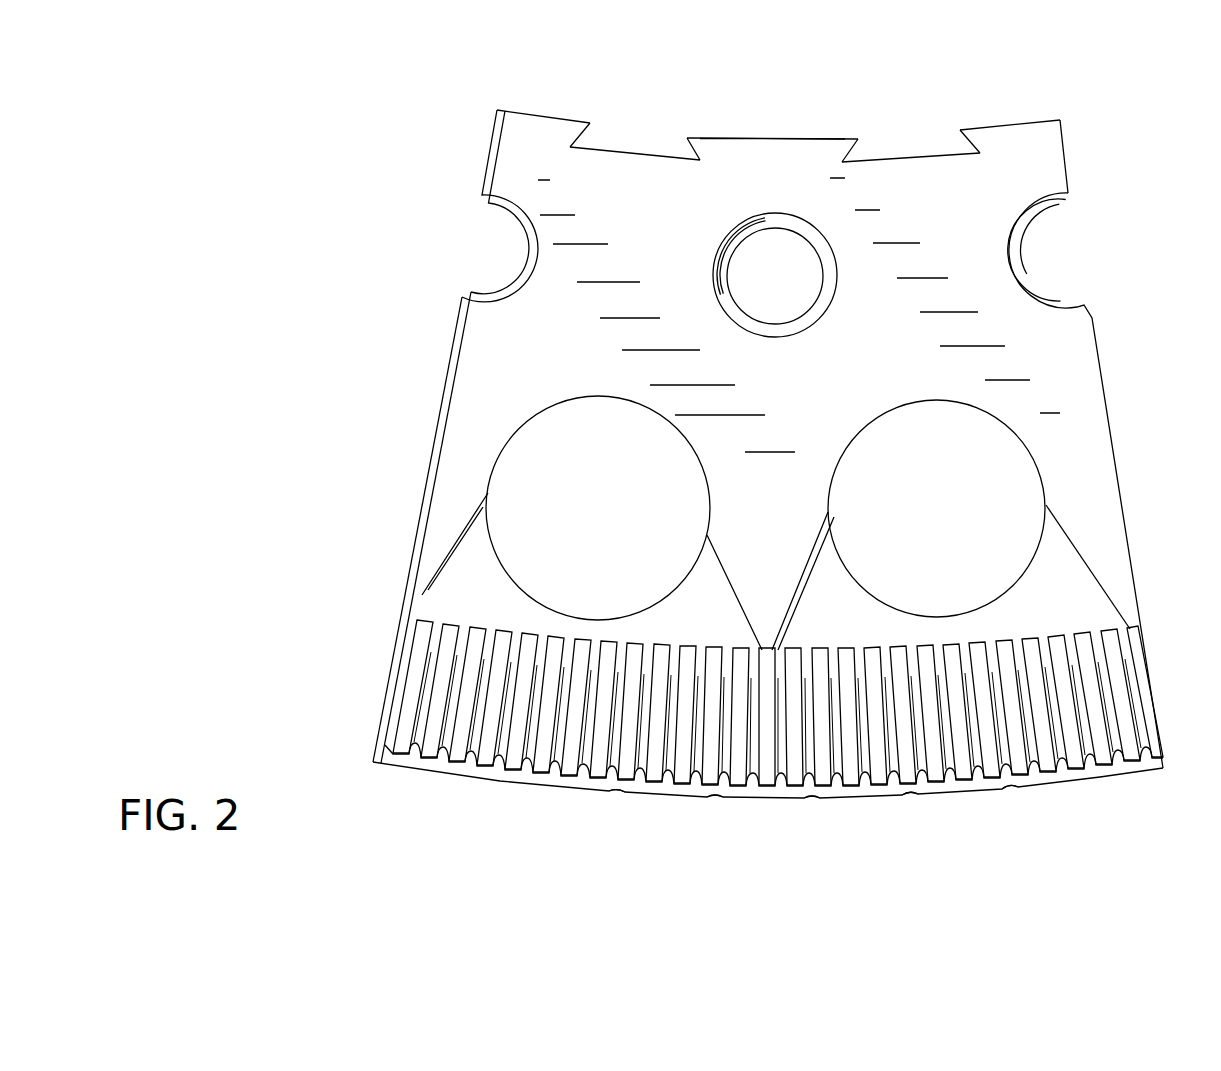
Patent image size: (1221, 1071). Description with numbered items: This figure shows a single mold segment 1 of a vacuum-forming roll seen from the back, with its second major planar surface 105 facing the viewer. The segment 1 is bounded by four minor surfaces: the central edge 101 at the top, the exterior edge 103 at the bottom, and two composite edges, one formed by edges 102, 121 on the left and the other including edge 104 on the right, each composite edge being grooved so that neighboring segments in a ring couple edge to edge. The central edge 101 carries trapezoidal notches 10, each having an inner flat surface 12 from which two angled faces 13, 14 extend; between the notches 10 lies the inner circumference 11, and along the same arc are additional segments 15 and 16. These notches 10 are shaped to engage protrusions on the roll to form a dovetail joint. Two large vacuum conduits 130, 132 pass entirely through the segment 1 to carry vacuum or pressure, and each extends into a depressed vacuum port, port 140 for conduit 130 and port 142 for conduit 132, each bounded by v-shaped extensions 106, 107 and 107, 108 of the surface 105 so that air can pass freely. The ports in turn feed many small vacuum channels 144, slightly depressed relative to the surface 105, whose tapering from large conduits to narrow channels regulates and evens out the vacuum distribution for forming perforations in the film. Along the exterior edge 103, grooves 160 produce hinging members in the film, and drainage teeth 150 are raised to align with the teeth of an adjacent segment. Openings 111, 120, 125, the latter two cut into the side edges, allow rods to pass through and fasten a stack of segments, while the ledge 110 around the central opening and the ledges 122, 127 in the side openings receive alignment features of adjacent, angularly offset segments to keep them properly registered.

The mold segment 1 is at (396, 116).
The trapezoidal notch 10 is at (640, 88).
The inner circumference 11 is at (723, 138).
The inner flat surface 12 is at (633, 151).
The angled face 13 is at (690, 144).
The angled face 14 is at (592, 125).
The additional segment 15 is at (1011, 125).
The additional segment 16 is at (533, 116).
The central edge 101 is at (781, 132).
The composite edge 102 is at (436, 445).
The exterior edge 103 is at (883, 798).
The composite edge 104 is at (1106, 412).
The second major planar surface 105 is at (1050, 162).
The v-shaped extension 106 is at (437, 544).
The v-shaped extension 107 is at (747, 583).
The v-shaped extension 108 is at (1122, 578).
The ledge 110 is at (728, 244).
The opening 111 is at (780, 304).
The opening 120 is at (512, 230).
The composite edge 121 is at (456, 380).
The ledge 122 is at (515, 273).
The opening 125 is at (1049, 221).
The ledge 127 is at (1026, 270).
The vacuum conduit 130 is at (578, 506).
The vacuum conduit 132 is at (917, 512).
The vacuum port 140 is at (473, 611).
The vacuum port 142 is at (833, 630).
The vacuum channel 144 is at (503, 768).
The drainage tooth 150 is at (403, 737).
The groove 160 is at (715, 798).